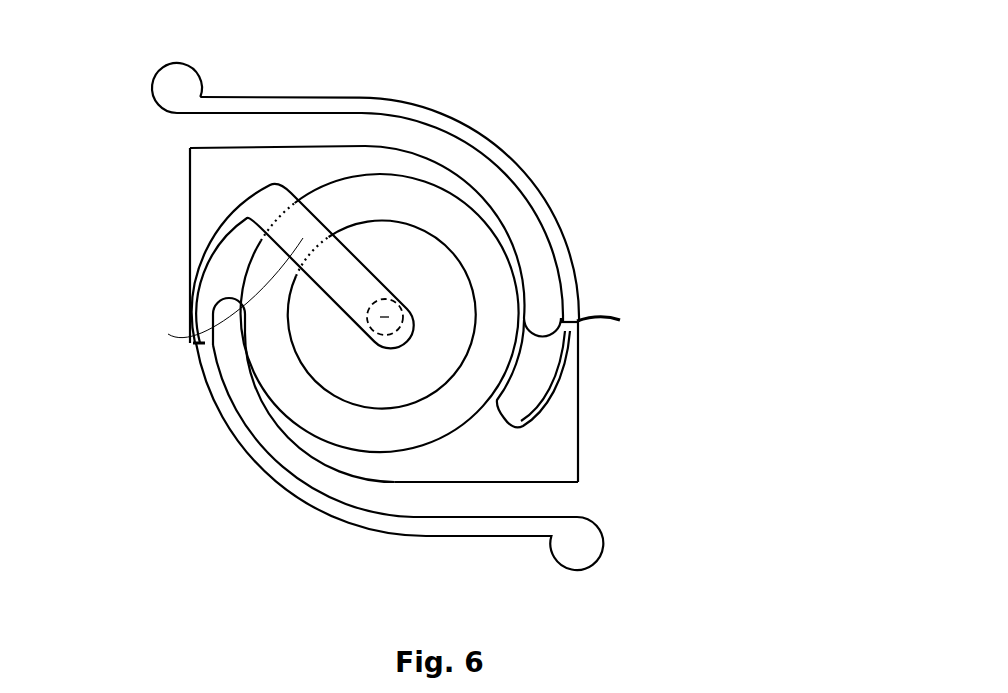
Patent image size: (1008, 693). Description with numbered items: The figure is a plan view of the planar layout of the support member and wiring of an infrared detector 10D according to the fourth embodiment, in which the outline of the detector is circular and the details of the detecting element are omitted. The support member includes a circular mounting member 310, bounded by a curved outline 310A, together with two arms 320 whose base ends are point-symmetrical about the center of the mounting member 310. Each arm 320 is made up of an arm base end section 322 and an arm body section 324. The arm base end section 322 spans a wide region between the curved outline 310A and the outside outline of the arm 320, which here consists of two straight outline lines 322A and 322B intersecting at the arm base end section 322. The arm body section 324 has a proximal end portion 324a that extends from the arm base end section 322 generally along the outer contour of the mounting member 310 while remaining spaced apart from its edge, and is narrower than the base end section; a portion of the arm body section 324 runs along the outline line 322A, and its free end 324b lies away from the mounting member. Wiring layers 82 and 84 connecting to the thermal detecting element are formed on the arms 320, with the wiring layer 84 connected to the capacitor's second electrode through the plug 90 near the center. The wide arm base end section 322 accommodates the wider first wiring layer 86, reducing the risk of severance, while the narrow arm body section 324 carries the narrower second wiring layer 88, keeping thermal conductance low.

The infrared detector 10D is at (597, 115).
The arm 320 is at (760, 250).
The arm body section 324 is at (572, 253).
The proximal end portion 324a is at (573, 310).
The spring end loop 324b is at (253, 97).
The arm base end section 322 is at (355, 167).
The straight outline line 322A is at (210, 142).
The straight outline line 322B is at (190, 218).
The curved outline 310A is at (413, 175).
The mounting member 310 is at (450, 437).
The plug 90 is at (396, 318).
The wiring layer 82 is at (560, 395).
The wiring layer 84 is at (72, 310).
The second wiring layer 88 is at (212, 312).
The first wiring layer 86 is at (205, 340).